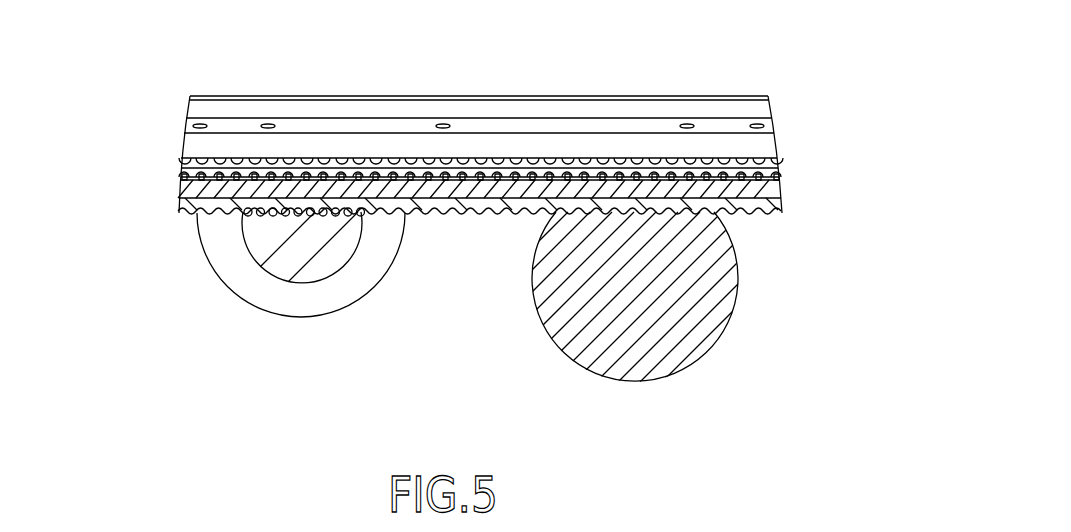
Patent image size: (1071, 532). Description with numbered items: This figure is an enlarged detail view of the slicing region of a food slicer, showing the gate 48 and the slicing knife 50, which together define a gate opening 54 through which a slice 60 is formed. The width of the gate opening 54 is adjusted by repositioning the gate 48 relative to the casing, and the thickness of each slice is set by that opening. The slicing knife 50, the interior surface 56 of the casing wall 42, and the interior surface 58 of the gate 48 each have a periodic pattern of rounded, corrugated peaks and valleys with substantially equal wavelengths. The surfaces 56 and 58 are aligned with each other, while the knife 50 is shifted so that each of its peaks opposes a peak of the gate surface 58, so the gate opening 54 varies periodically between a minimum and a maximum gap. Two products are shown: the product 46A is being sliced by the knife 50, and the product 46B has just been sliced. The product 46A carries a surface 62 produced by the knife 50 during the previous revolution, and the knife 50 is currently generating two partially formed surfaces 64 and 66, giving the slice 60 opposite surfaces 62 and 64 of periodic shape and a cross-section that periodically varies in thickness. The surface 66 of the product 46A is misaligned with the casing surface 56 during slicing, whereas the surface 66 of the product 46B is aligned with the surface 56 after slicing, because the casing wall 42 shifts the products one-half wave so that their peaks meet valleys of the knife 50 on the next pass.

The gate 48 is at (583, 108).
The surface 62 is at (293, 160).
The partially generated surface 64 is at (328, 184).
The slice 60 is at (338, 167).
The gate opening 54 is at (780, 167).
The interior surface 58 is at (780, 183).
The casing wall 42 is at (770, 210).
The interior surface 56 is at (748, 213).
The slicing knife 50 is at (185, 190).
The product 46A is at (230, 252).
The product 46B is at (695, 248).
The surface 66 is at (352, 213).